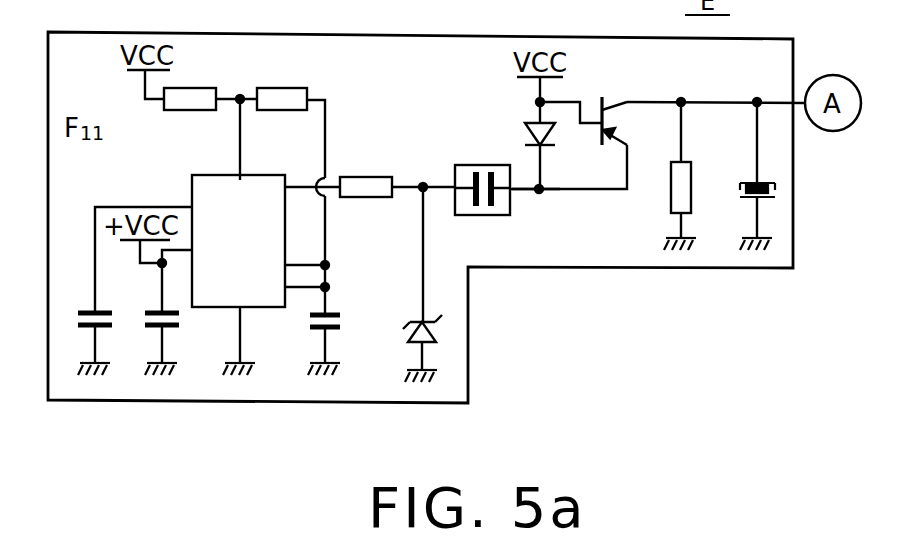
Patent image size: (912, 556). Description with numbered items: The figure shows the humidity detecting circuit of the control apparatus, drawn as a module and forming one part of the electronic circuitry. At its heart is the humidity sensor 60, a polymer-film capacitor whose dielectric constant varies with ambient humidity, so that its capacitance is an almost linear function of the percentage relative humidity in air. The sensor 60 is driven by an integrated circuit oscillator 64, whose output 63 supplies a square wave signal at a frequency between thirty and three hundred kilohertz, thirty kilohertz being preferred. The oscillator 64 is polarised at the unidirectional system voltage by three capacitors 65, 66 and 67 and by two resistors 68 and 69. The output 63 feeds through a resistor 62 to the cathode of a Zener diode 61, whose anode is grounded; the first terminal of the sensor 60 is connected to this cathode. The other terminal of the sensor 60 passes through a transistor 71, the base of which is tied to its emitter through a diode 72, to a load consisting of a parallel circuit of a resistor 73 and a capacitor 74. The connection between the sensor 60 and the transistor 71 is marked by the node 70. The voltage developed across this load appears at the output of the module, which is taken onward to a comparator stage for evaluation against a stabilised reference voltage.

The humidity sensor 60 is at (470, 165).
The Zener diode 61 is at (418, 320).
The resistor 62 is at (363, 177).
The output 63 is at (255, 175).
The integrated circuit oscillator 64 is at (258, 221).
The capacitor 65 is at (84, 311).
The capacitor 66 is at (151, 311).
The capacitor 67 is at (313, 329).
The resistor 68 is at (183, 88).
The resistor 69 is at (278, 88).
The signal node 70 is at (522, 193).
The transistor 71 is at (616, 126).
The diode 72 is at (548, 128).
The resistor 73 is at (691, 187).
The capacitor 74 is at (742, 188).